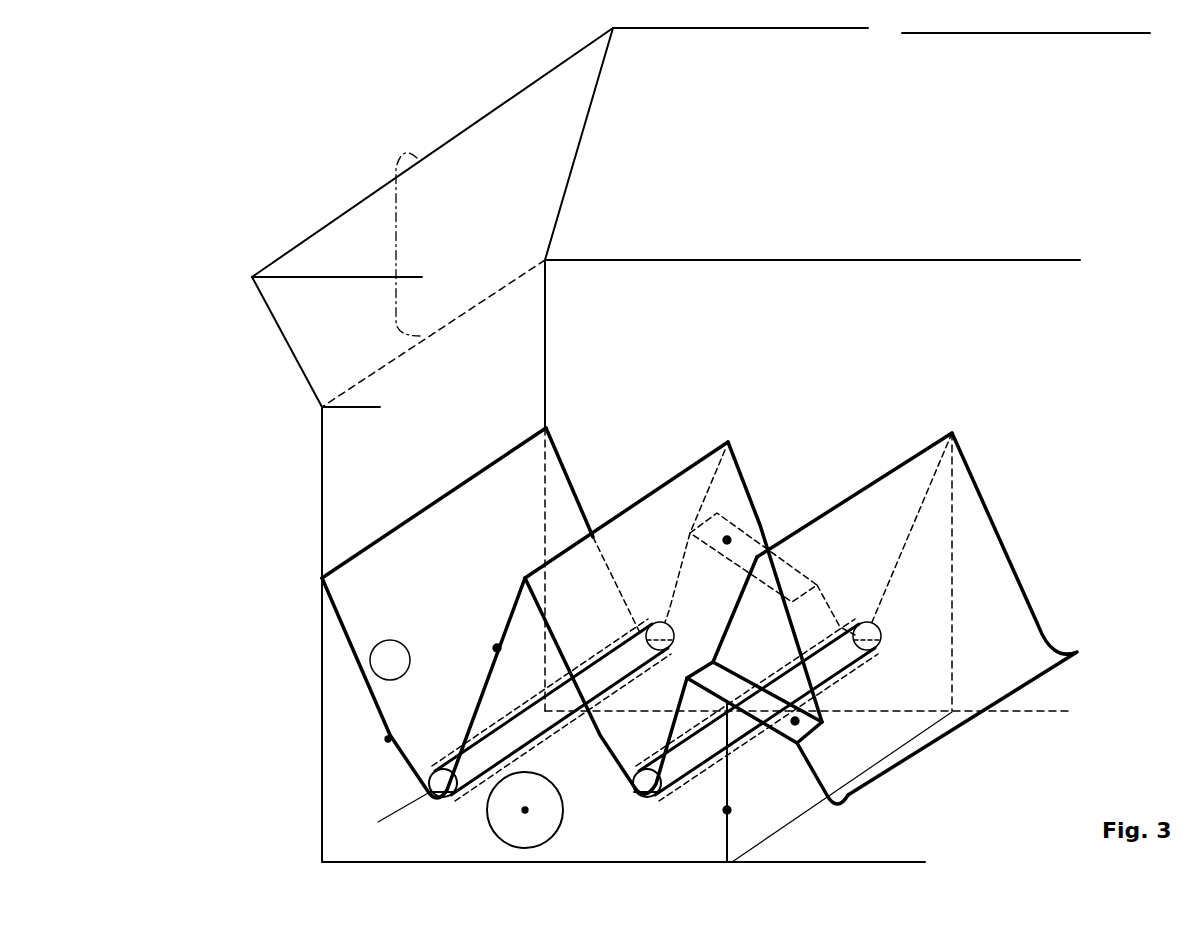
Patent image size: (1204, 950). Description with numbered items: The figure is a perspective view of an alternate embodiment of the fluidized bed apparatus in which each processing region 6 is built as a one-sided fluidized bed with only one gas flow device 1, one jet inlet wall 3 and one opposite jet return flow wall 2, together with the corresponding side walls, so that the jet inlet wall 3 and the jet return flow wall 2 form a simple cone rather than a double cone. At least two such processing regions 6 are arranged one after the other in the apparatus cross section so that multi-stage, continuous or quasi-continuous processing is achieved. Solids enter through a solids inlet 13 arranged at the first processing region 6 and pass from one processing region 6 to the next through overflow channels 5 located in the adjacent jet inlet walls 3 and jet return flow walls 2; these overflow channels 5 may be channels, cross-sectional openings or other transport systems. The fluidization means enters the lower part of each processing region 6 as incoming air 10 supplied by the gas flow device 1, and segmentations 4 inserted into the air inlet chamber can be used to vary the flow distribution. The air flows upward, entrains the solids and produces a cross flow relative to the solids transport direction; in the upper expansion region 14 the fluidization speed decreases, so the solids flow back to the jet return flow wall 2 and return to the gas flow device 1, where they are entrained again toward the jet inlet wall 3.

The gas flow device 1 is at (437, 781).
The jet return flow wall 2 is at (497, 648).
The jet inlet wall 3 is at (388, 739).
The segmentation 4 is at (727, 810).
The overflow channel 5 is at (727, 540).
The processing region 6 is at (737, 402).
The incoming air 10 is at (520, 815).
The solids inlet 13 is at (386, 668).
The upper expansion region 14 is at (396, 248).